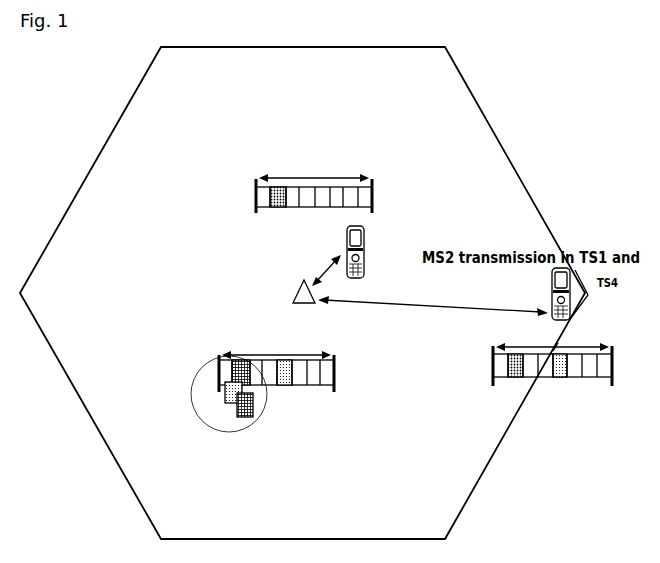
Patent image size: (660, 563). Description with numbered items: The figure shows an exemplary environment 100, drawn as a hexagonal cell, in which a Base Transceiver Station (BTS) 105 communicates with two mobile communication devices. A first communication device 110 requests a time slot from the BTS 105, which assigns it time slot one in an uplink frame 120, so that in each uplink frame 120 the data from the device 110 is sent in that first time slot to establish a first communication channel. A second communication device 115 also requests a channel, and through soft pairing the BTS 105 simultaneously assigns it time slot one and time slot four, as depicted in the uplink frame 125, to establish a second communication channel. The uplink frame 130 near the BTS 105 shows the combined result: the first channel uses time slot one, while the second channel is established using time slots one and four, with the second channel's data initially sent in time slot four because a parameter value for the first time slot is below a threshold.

The environment 100 is at (532, 512).
The Base Transceiver Station (BTS) 105 is at (293, 300).
The communication device 110 is at (364, 250).
The communication device 115 is at (512, 297).
The uplink frame 120 is at (256, 197).
The uplink frame 125 is at (493, 366).
The uplink frame 130 is at (334, 373).